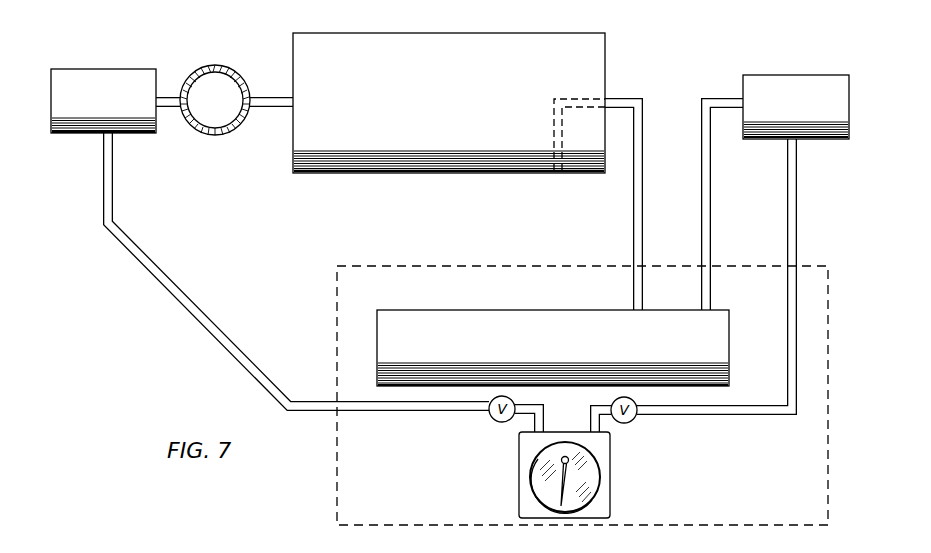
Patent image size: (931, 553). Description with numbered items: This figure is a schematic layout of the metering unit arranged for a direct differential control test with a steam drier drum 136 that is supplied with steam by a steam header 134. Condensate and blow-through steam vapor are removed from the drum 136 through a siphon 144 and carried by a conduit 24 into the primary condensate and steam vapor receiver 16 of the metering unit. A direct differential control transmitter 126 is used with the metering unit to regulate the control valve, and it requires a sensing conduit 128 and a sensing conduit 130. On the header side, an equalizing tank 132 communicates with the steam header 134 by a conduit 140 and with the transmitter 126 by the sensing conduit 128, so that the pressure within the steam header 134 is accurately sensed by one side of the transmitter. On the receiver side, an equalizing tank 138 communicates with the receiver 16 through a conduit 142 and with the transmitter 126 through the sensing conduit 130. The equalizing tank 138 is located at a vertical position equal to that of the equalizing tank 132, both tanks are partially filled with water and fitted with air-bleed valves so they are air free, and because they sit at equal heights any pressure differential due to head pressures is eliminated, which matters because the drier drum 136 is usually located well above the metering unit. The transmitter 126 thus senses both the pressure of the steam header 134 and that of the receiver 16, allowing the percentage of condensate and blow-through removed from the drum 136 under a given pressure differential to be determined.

The receiver 16 is at (541, 312).
The conduit 24 is at (644, 222).
The direct differential control transmitter 126 is at (604, 478).
The sensing conduit 128 is at (377, 414).
The sensing conduit 130 is at (733, 415).
The equalizing tank 132 is at (93, 133).
The steam header 134 is at (213, 135).
The drum 136 is at (537, 14).
The equalizing tank 138 is at (793, 75).
The conduit 140 is at (170, 97).
The conduit 142 is at (712, 243).
The siphon 144 is at (553, 130).